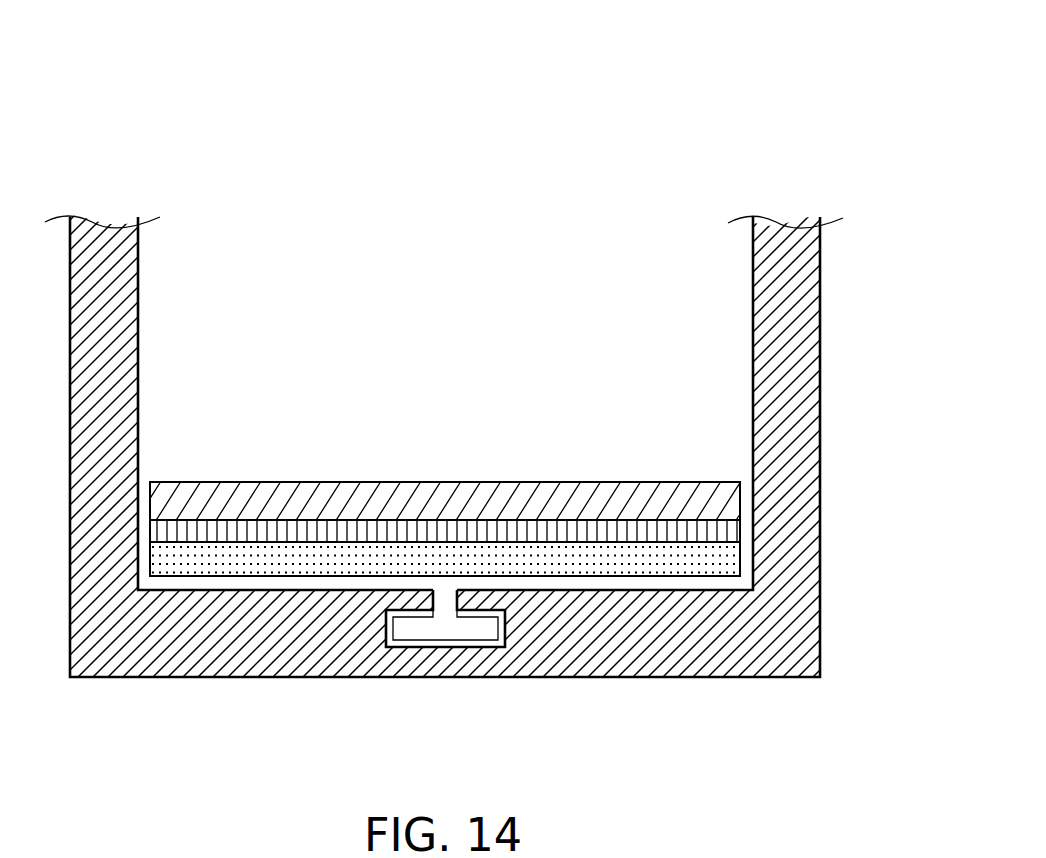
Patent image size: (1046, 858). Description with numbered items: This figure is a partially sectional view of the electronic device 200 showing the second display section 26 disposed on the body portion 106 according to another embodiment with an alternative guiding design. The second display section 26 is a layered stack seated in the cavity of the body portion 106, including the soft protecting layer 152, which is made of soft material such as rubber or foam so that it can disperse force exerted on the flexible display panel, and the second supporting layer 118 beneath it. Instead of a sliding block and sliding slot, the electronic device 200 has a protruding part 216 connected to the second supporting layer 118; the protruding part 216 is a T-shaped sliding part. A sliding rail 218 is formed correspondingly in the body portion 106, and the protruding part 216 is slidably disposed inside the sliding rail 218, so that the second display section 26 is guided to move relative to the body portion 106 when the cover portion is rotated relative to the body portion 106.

The electronic device 200 is at (748, 110).
The body portion 106 is at (798, 370).
The second display section 26 is at (586, 495).
The soft protecting layer 152 is at (528, 527).
The second supporting layer 118 is at (473, 558).
The protruding part 216 is at (443, 623).
The sliding rail 218 is at (503, 631).